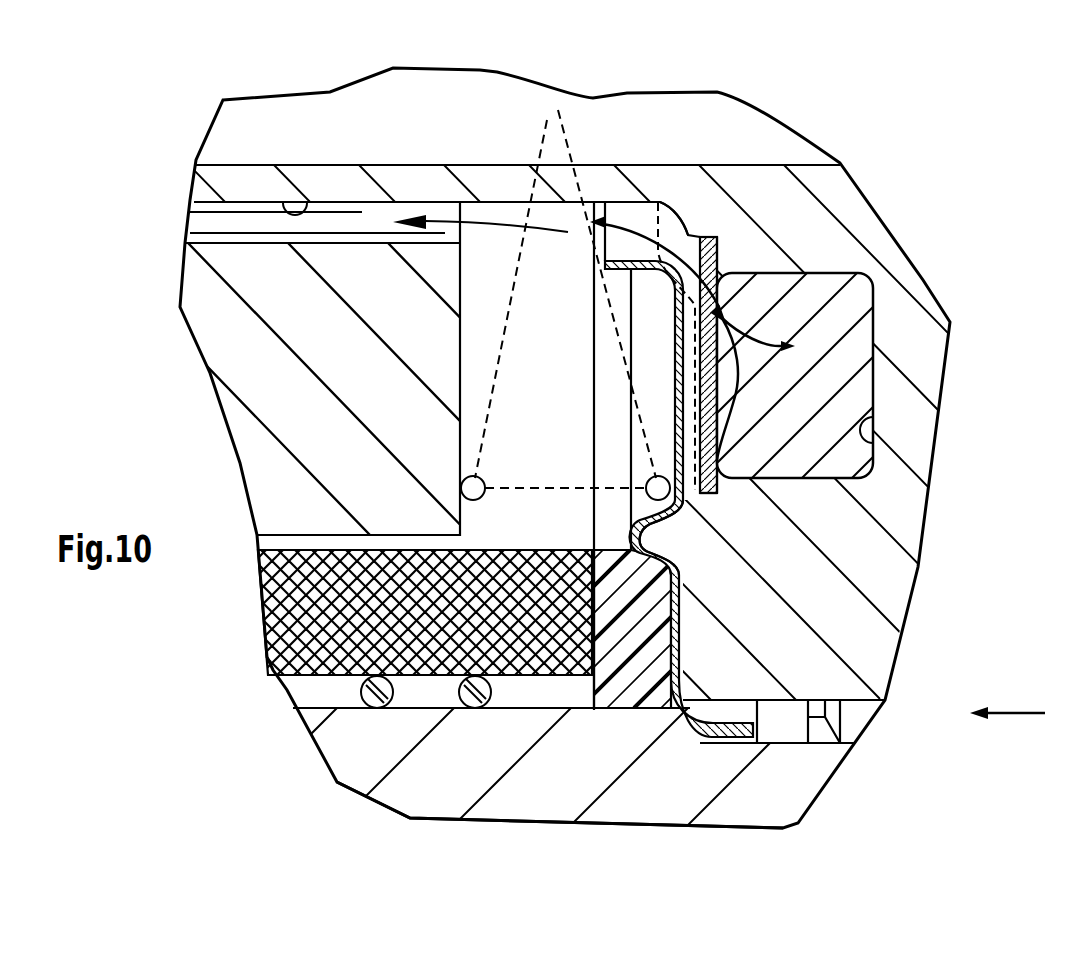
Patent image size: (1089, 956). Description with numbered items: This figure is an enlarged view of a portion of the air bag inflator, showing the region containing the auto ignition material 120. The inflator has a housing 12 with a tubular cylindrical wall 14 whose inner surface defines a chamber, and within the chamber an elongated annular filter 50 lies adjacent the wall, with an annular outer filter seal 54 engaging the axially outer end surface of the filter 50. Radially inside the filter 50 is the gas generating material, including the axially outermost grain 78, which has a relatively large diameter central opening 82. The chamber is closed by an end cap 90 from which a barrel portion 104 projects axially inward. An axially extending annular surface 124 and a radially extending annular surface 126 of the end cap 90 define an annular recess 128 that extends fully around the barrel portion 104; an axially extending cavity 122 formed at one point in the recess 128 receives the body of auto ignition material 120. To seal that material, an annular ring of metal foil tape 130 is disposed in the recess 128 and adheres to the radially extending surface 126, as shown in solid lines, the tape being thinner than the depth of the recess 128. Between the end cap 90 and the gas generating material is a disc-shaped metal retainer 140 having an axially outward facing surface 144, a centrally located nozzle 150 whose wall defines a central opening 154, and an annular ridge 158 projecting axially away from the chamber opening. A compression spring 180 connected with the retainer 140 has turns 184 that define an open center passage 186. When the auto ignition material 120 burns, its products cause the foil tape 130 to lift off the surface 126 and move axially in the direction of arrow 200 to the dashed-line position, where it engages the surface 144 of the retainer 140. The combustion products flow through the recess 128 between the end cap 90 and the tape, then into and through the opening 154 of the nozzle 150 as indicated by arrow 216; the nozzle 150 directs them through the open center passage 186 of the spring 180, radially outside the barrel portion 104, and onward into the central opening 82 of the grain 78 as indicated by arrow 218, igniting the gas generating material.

The housing 12 is at (415, 828).
The tubular cylindrical wall 14 is at (533, 822).
The filter 50 is at (300, 622).
The outer filter seal 54 is at (622, 650).
The grain 78 is at (327, 363).
The central opening 82 is at (247, 222).
The end cap 90 is at (955, 339).
The barrel portion 104 is at (307, 200).
The auto ignition material 120 is at (850, 353).
The cavity 122 is at (877, 443).
The axially extending annular surface 124 is at (720, 253).
The radially extending annular surface 126 is at (718, 256).
The annular recess 128 is at (703, 504).
The metal foil tape 130 is at (697, 237).
The retainer 140 is at (664, 443).
The axially outward facing surface 144 is at (683, 640).
The nozzle 150 is at (608, 250).
The central opening 154 is at (643, 217).
The annular ridge 158 is at (680, 532).
The compression spring 180 is at (482, 479).
The turns 184 is at (549, 486).
The open center passage 186 is at (500, 233).
The arrow 200 is at (1007, 698).
The arrow 216 is at (673, 213).
The arrow 218 is at (456, 221).